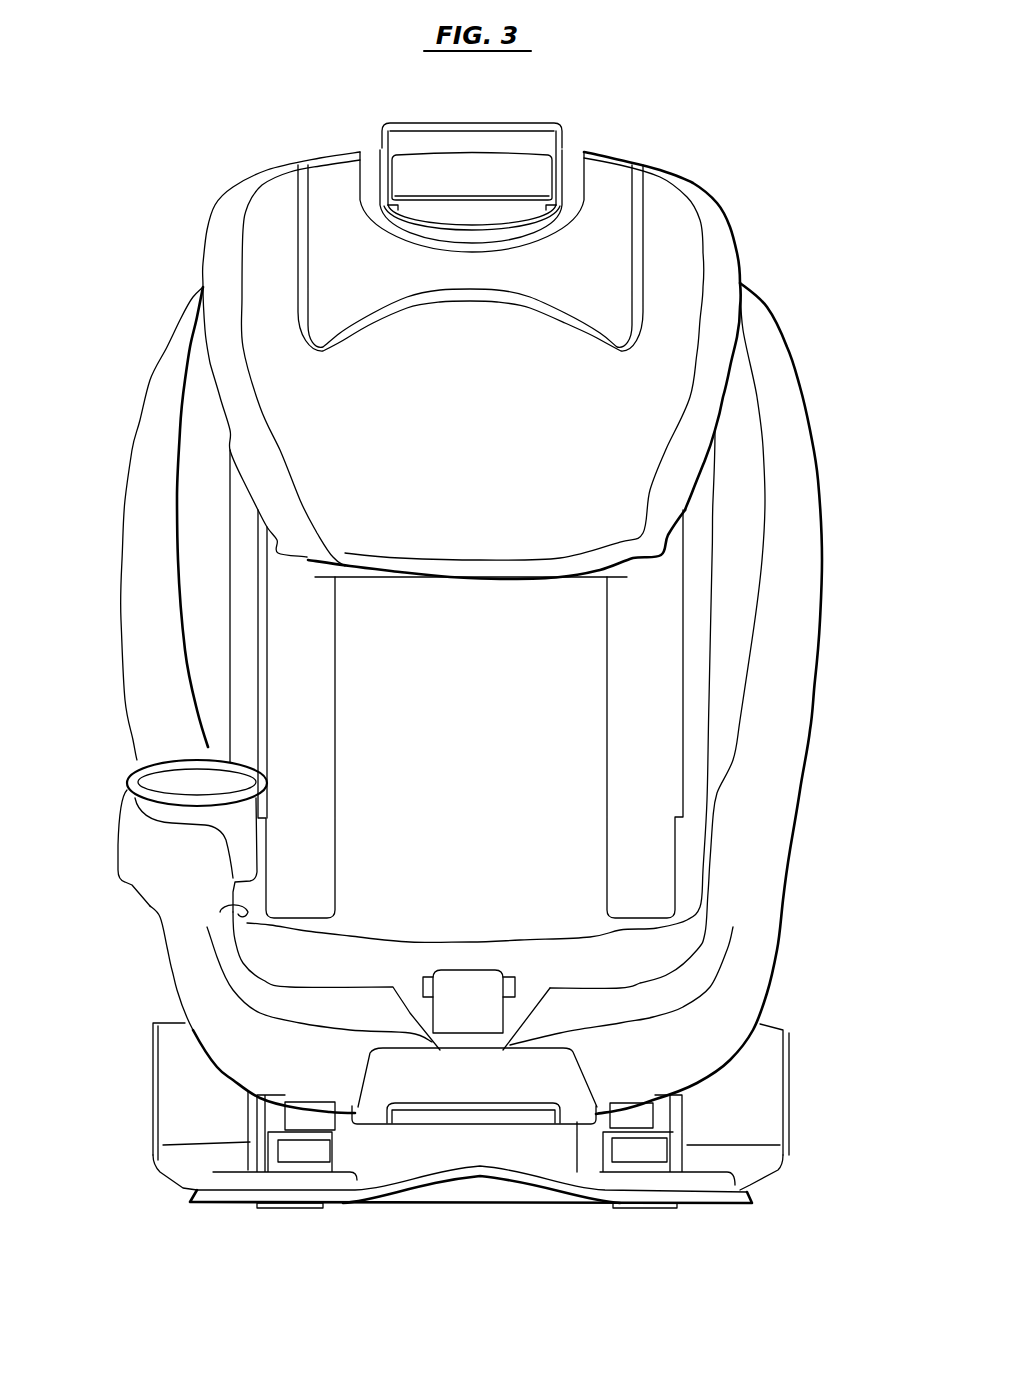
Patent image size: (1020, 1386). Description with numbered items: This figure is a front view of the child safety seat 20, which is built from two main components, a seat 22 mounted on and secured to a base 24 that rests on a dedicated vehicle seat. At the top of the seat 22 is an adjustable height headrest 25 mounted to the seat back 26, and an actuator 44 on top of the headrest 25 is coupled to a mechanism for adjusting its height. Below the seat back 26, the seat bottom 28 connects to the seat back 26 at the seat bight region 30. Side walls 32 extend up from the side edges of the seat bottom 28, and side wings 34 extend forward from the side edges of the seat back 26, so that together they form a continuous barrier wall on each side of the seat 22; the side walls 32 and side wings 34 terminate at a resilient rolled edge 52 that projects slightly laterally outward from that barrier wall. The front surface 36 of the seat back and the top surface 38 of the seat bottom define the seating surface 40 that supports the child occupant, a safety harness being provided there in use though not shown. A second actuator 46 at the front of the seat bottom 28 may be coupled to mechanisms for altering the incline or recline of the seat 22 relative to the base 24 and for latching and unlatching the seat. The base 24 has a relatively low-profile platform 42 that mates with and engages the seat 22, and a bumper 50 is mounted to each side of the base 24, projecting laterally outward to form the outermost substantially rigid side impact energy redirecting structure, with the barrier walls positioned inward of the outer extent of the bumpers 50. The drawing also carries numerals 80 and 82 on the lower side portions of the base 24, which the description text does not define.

The child safety seat 20 is at (100, 206).
The seat 22 is at (103, 522).
The base 24 is at (442, 1188).
The headrest 25 is at (722, 230).
The seat back 26 is at (810, 422).
The seat bottom 28 is at (747, 988).
The seat bight region 30 is at (378, 930).
The side walls 32 is at (228, 905).
The side wings 34 is at (737, 510).
The front surface 36 is at (471, 606).
The top surface 38 is at (565, 953).
The seating surface 40 is at (533, 718).
The platform 42 is at (493, 1163).
The actuator 44 is at (475, 186).
The actuator 46 is at (457, 1073).
The bumper 50 is at (149, 1077).
The rolled edge 52 is at (157, 397).
The side panel face 80 is at (200, 1105).
The side panel lower edge 82 is at (163, 1140).